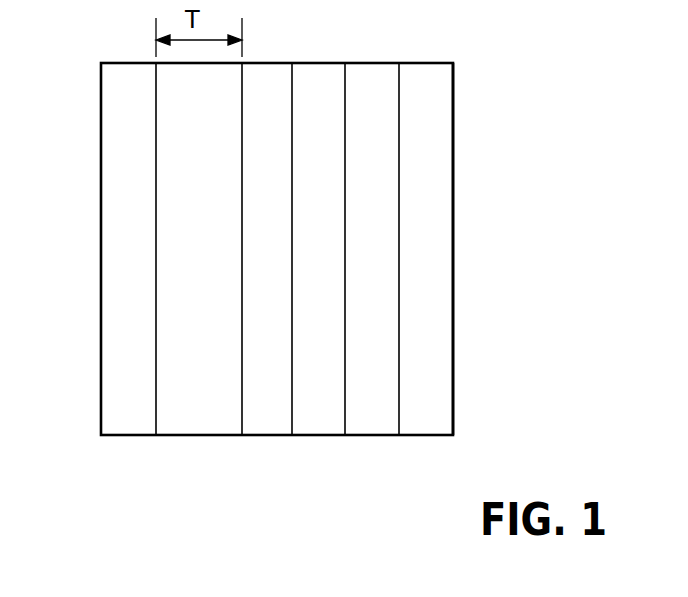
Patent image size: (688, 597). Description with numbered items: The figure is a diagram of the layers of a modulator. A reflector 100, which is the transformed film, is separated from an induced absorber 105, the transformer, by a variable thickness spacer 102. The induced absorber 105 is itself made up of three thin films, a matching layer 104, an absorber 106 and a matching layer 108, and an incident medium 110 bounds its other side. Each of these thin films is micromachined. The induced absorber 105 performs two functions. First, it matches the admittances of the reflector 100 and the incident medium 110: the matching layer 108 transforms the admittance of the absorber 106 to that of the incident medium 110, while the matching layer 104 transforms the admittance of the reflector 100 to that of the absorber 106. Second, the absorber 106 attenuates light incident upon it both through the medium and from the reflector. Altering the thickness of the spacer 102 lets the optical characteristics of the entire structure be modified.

The reflector 100 is at (101, 362).
The variable thickness spacer 102 is at (193, 436).
The matching layer 104 is at (258, 436).
The induced absorber 105 is at (392, 59).
The absorber 106 is at (322, 436).
The matching layer 108 is at (382, 436).
The incident medium 110 is at (455, 384).